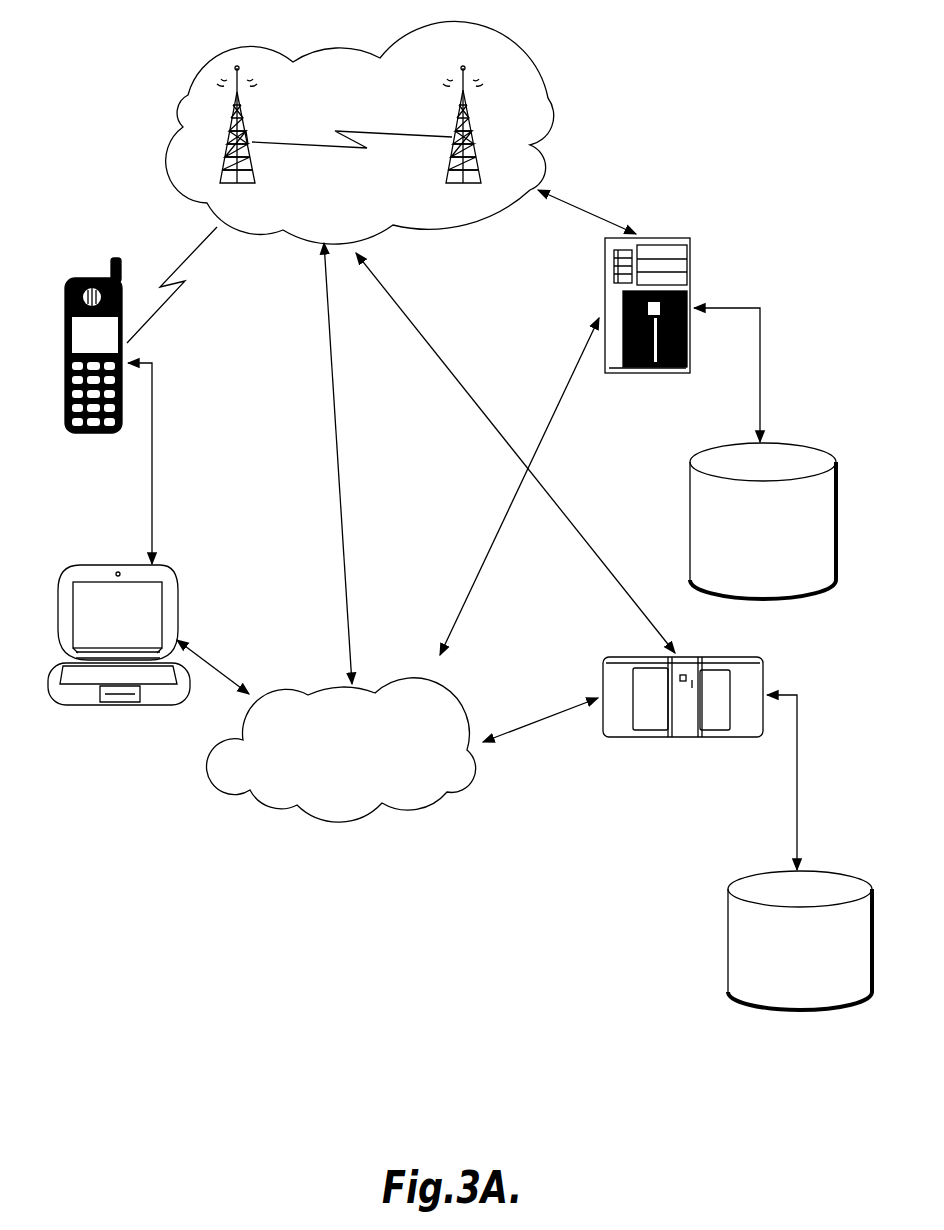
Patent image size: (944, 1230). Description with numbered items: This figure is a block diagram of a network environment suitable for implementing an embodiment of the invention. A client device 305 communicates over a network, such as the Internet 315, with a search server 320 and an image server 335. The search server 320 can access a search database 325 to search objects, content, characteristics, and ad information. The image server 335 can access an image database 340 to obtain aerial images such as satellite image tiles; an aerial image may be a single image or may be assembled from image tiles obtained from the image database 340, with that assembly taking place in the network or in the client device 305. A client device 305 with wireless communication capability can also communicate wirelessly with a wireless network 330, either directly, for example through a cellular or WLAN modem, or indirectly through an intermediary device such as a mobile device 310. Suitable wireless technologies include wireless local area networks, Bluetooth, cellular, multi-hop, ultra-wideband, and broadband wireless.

The client device 305 is at (119, 661).
The mobile device 310 is at (90, 393).
The Internet 315 is at (341, 750).
The search server 320 is at (647, 348).
The search database 325 is at (763, 521).
The wireless network 330 is at (360, 133).
The image server 335 is at (683, 736).
The image database 340 is at (800, 940).